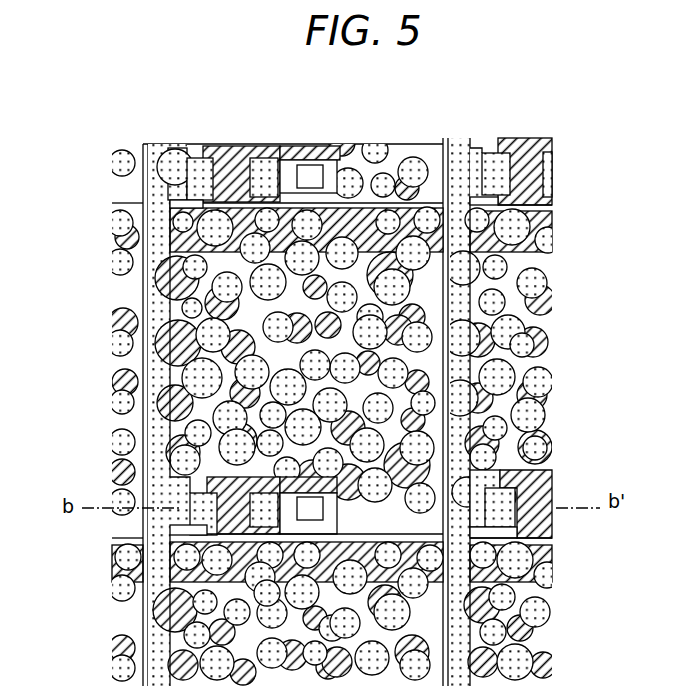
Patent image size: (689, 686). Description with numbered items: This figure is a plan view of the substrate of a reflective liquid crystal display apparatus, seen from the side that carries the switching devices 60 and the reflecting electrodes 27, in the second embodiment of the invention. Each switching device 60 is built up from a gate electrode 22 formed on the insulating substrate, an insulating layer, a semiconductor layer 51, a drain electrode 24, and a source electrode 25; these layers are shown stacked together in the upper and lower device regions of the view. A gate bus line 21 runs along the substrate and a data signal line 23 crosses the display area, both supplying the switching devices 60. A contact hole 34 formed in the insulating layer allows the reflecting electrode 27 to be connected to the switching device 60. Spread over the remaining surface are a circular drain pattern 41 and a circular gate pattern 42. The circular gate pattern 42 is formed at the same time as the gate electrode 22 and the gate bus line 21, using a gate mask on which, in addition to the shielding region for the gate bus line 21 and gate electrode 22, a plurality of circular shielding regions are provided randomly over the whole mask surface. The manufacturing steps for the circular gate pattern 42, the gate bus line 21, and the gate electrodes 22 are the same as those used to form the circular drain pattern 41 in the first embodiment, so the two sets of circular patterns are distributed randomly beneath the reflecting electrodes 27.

The gate bus line 21 is at (178, 282).
The gate electrode 22 is at (203, 158).
The data signal line 23 is at (143, 203).
The drain electrode 24 is at (180, 158).
The source electrode 25 is at (290, 162).
The reflecting electrode 27 is at (178, 268).
The contact hole 34 is at (310, 172).
The circular drain pattern 41 is at (378, 272).
The circular gate pattern 42 is at (412, 291).
The semiconductor layer 51 is at (238, 158).
The switching device 60 is at (389, 87).